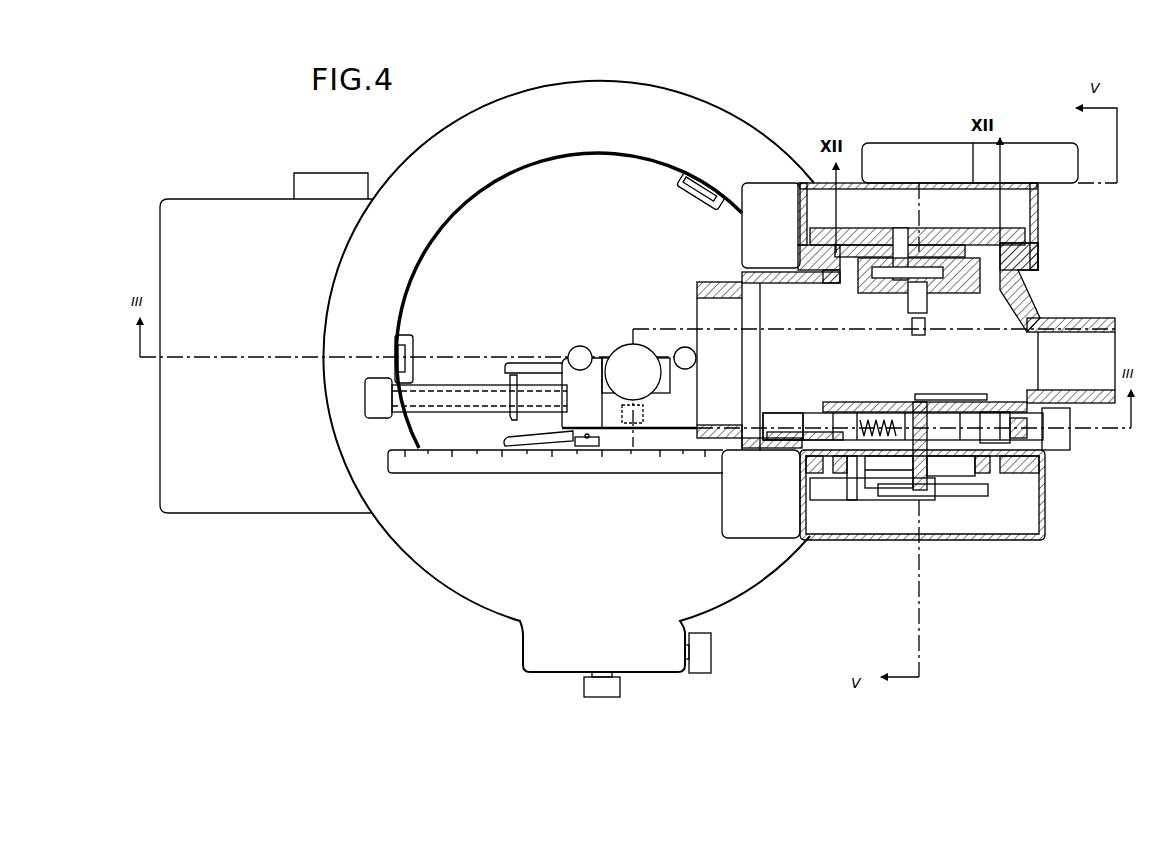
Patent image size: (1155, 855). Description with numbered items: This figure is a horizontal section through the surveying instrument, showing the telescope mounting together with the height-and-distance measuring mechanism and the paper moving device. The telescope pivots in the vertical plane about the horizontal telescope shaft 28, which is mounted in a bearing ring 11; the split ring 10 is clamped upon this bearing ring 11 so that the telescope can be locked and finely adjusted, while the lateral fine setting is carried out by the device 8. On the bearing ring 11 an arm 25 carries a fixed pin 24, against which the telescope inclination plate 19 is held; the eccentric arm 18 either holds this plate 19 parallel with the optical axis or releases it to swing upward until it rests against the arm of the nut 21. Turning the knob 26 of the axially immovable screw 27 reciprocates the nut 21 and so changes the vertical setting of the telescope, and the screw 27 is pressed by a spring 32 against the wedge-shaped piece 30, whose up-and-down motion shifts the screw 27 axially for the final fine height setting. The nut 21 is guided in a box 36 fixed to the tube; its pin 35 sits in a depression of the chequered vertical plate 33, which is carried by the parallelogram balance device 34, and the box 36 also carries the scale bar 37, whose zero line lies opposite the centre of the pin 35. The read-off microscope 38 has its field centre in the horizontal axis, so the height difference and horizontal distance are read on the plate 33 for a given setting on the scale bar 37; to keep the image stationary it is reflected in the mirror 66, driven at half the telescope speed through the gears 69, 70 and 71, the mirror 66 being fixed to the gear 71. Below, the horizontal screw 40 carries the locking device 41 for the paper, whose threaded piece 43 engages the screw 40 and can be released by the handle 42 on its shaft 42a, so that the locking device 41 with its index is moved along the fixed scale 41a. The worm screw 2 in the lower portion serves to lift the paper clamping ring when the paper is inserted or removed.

The worm screw 2 is at (341, 183).
The lateral fine setting device 8 is at (648, 653).
The split ring 10 is at (823, 470).
The bearing ring 11 is at (838, 472).
The eccentric arm 18 is at (812, 425).
The telescope inclination plate 19 is at (777, 418).
The nut 21 is at (938, 436).
The pin 24 is at (790, 432).
The arm 25 is at (787, 450).
The knob 26 is at (1062, 433).
The screw 27 is at (1032, 430).
The horizontal telescope shaft 28 is at (847, 465).
The wedge-shaped piece 30 is at (1027, 473).
The spring 32 is at (875, 418).
The vertical plate 33 is at (970, 496).
The balance device 34 is at (882, 486).
The pin 35 is at (930, 465).
The box 36 is at (983, 473).
The scale bar 37 is at (968, 395).
The read-off microscope 38 is at (1010, 153).
The horizontal screw 40 is at (463, 395).
The locking device 41 is at (568, 388).
The fixed scale 41a is at (662, 462).
The handle 42 is at (611, 446).
The shaft 42a is at (585, 434).
The threaded piece 43 is at (645, 414).
The mirror 66 is at (928, 326).
The gear 69 is at (875, 245).
The gear 70 is at (895, 290).
The gear 71 is at (930, 290).